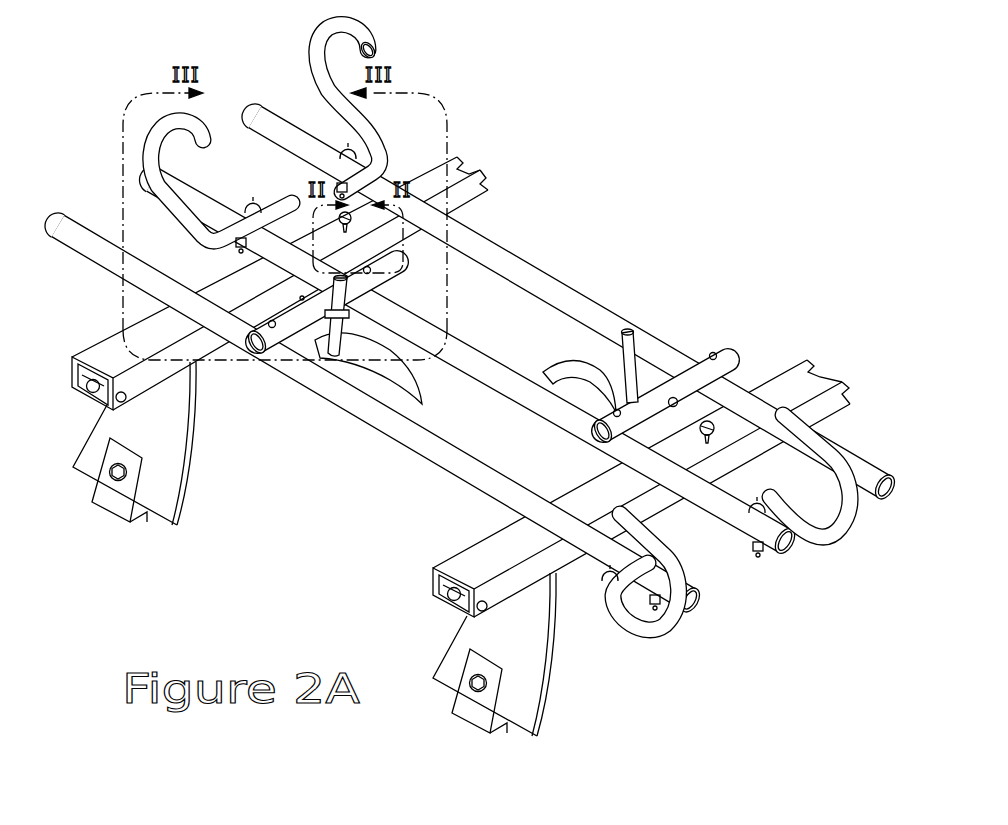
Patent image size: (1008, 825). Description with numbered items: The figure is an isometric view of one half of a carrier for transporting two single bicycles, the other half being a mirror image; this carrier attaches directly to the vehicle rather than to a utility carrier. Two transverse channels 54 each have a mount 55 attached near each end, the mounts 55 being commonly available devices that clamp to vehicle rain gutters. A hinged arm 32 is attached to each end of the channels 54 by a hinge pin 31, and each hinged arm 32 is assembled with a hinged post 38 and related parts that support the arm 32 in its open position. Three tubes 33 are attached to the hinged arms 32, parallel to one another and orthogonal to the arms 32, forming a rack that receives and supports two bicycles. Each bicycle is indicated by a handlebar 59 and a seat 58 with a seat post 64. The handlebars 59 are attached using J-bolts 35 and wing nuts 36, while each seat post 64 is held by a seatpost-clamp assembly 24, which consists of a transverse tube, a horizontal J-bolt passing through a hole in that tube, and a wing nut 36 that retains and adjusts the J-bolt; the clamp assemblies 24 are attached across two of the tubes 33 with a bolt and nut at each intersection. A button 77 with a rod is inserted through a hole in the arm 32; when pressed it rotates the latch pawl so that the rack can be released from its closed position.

The seatpost-clamp assembly 24 is at (383, 282).
The hinge pin 31 is at (126, 403).
The hinged arm 32 is at (118, 341).
The tube 33 is at (553, 296).
The J-bolt 35 is at (343, 146).
The wing nut 36 is at (350, 183).
The hinged post 38 is at (90, 398).
The transverse channel 54 is at (458, 178).
The mount 55 is at (168, 449).
The seat 58 is at (426, 403).
The handlebar 59 is at (314, 60).
The seat post 64 is at (333, 346).
The button 77 is at (703, 438).